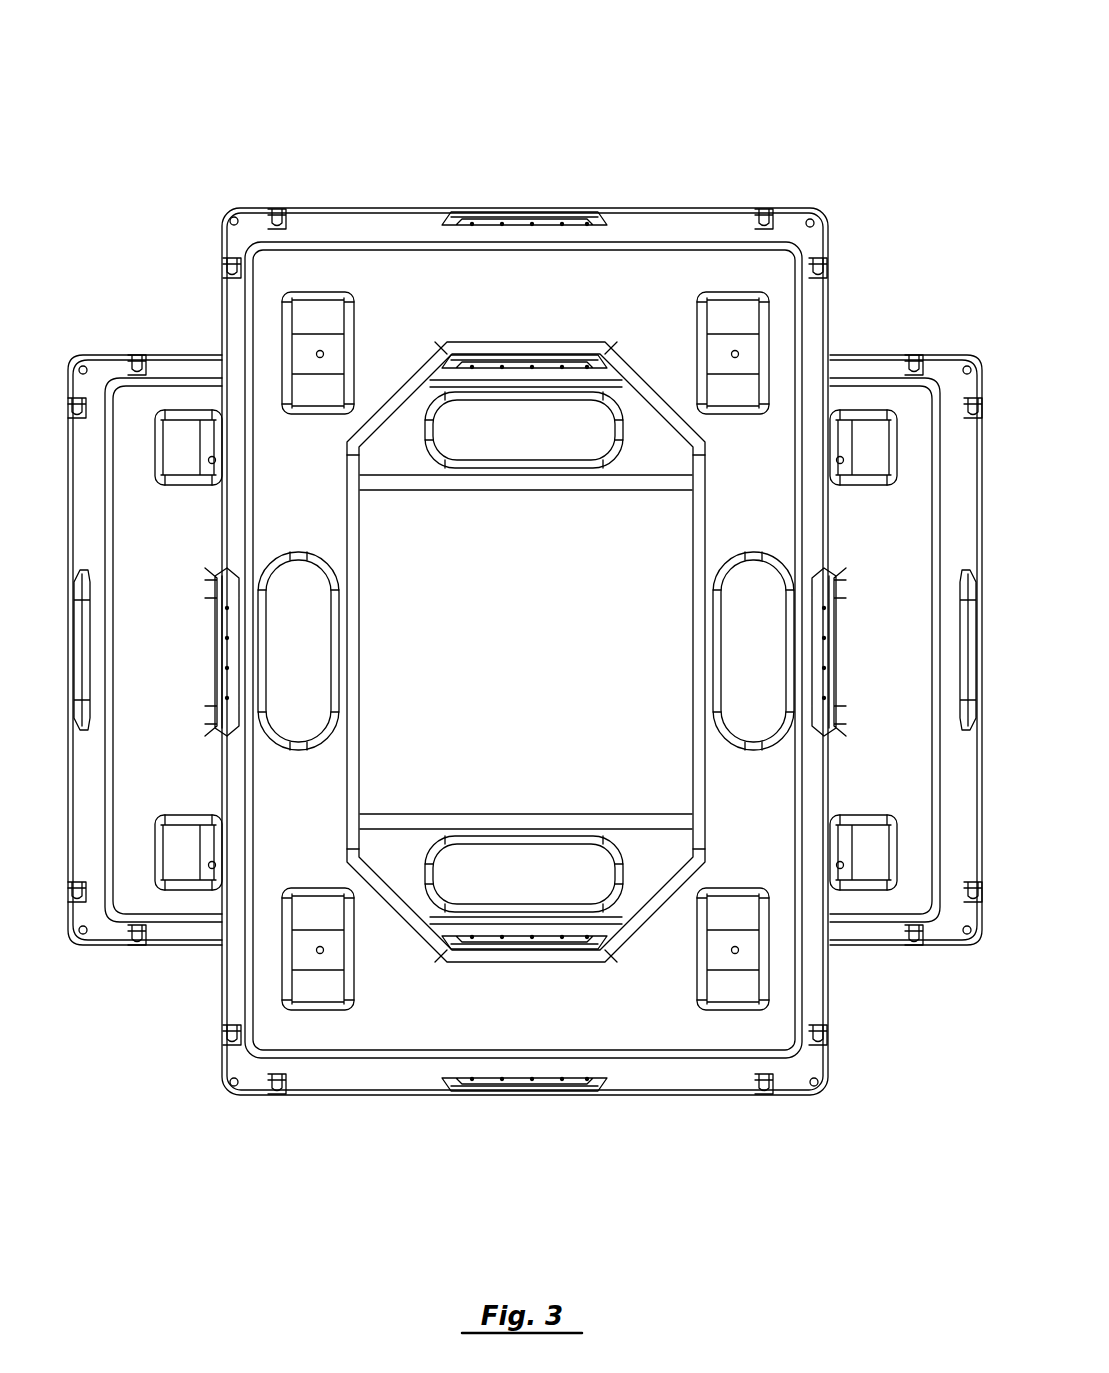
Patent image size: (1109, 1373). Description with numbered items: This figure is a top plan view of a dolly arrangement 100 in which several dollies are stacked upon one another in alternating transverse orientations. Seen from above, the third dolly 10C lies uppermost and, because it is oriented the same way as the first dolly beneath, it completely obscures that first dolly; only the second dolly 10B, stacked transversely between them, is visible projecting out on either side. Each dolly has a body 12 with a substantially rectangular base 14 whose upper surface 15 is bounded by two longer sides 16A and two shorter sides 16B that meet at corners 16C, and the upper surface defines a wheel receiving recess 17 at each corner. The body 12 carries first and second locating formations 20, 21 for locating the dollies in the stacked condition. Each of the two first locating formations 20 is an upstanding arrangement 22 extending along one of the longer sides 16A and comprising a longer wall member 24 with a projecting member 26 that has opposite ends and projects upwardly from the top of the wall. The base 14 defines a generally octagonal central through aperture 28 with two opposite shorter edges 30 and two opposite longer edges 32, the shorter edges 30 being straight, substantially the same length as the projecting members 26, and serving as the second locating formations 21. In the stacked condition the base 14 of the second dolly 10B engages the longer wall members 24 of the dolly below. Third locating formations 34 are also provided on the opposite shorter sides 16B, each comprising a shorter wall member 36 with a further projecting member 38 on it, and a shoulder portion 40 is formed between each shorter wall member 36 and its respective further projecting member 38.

The dolly arrangement 100 is at (265, 175).
The second dolly 10B is at (165, 350).
The third dolly 10C is at (362, 200).
The body 12 is at (677, 200).
The base 14 is at (450, 275).
The upper surface 15 is at (668, 320).
The longer sides 16A is at (262, 508).
The shorter sides 16B is at (578, 242).
The corners 16C is at (232, 212).
The wheel receiving recess 17 is at (325, 312).
The first locating formations 20 is at (192, 382).
The second locating formations 21 is at (489, 352).
The upstanding arrangement 22 is at (205, 352).
The longer wall member 24 is at (838, 440).
The projecting member 26 is at (525, 358).
The through aperture 28 is at (362, 555).
The shorter edges 30 is at (525, 345).
The longer edges 32 is at (362, 628).
The third locating formations 34 is at (425, 200).
The shorter wall member 36 is at (637, 232).
The further projecting member 38 is at (535, 214).
The shoulder portion 40 is at (560, 226).